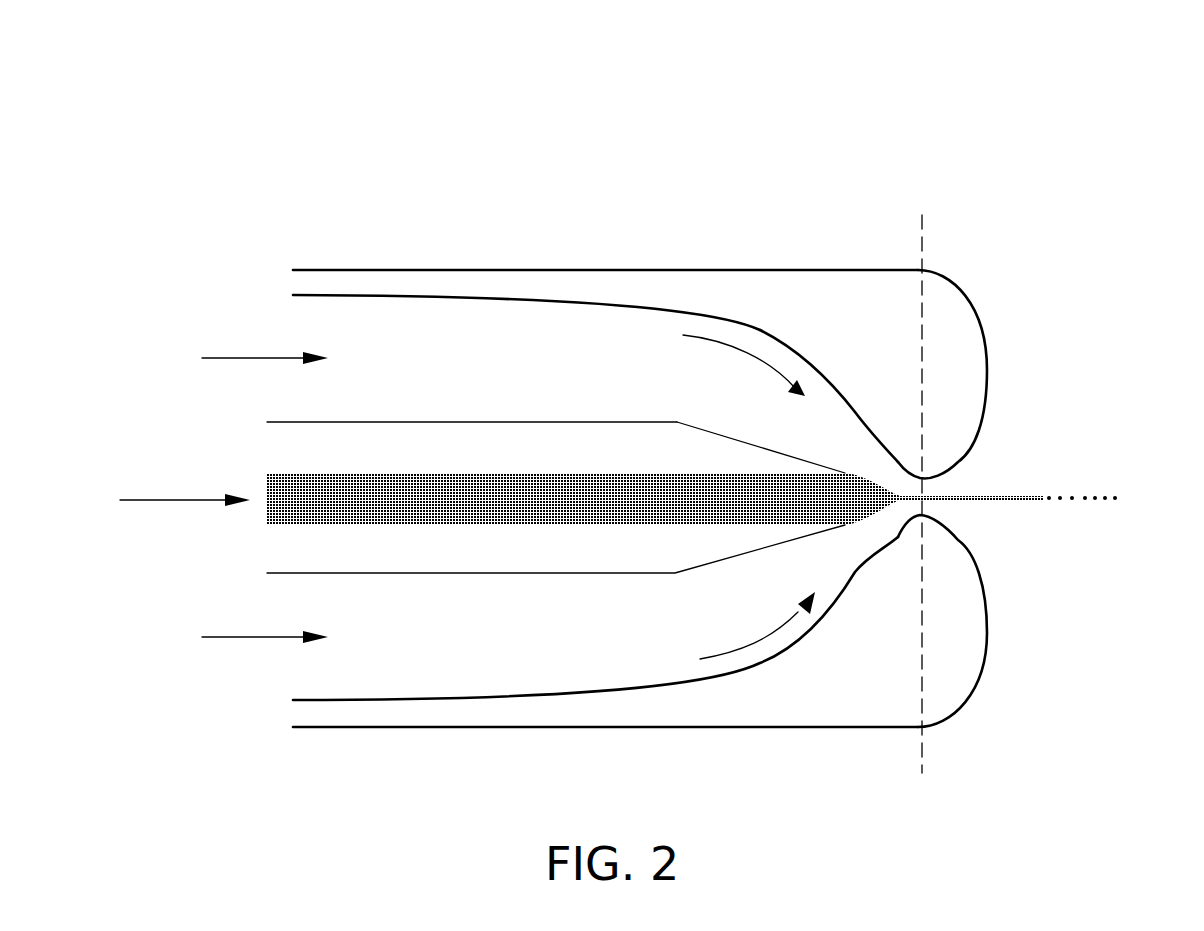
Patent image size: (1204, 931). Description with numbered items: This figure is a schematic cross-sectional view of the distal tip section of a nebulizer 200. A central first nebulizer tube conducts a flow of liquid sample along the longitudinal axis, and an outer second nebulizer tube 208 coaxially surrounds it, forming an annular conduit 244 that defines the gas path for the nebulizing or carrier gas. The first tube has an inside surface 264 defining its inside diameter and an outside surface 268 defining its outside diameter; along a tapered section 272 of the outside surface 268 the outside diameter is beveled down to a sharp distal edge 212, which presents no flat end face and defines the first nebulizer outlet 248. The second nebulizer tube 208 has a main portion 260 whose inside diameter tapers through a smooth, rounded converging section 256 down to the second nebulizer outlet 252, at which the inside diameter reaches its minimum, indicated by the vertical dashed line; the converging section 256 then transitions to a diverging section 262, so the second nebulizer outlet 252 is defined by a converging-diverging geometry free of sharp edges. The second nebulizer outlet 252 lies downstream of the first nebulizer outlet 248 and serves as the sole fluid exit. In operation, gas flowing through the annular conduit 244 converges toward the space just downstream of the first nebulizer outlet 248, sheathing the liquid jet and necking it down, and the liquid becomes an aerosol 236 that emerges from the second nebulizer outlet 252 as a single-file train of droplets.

The nebulizer 200 is at (382, 158).
The second nebulizer tube 208 is at (367, 283).
The main portion 260 is at (411, 268).
The converging section 256 is at (857, 418).
The diverging section 262 is at (960, 460).
The outside surface 268 is at (570, 420).
The tapered section 272 is at (703, 430).
The inside surface 264 is at (516, 525).
The distal edge 212 is at (852, 475).
The aerosol 236 is at (1090, 524).
The annular conduit 244 is at (433, 364).
The first nebulizer outlet 248 is at (868, 556).
The second nebulizer outlet 252 is at (995, 524).